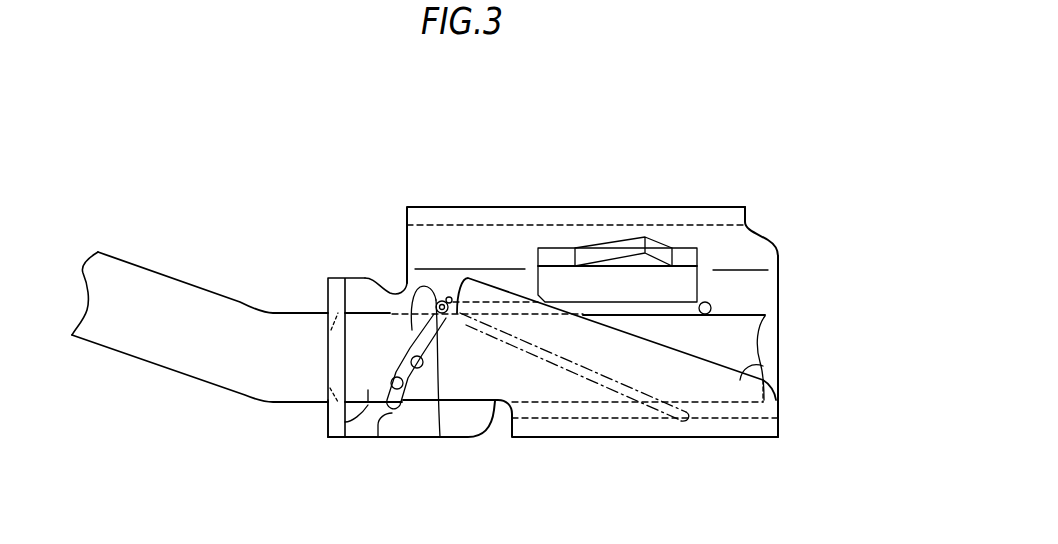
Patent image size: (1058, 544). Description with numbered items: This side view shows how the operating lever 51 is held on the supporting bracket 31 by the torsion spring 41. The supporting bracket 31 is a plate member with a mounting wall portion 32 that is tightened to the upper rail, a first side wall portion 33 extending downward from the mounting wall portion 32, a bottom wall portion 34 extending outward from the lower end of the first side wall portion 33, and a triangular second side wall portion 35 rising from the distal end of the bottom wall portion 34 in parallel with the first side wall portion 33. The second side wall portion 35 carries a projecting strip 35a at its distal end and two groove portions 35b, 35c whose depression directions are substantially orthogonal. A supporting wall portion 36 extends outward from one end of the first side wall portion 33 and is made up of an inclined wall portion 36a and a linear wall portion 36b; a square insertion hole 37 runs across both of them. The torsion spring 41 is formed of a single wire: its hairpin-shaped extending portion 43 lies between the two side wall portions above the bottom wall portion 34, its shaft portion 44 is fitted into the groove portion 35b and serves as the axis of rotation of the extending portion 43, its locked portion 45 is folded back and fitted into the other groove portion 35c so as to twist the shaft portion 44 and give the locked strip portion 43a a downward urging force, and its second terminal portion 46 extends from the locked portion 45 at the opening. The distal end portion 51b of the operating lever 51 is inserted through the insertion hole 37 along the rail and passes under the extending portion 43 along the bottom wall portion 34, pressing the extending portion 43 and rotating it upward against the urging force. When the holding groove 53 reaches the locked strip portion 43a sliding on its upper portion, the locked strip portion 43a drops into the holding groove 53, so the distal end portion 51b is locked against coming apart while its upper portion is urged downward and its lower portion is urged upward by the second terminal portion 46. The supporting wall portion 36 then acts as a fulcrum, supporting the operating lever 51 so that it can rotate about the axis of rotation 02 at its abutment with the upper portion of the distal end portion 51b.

The axis of rotation 02 is at (327, 332).
The supporting bracket 31 is at (621, 213).
The mounting wall portion 32 is at (706, 207).
The first side wall portion 33 is at (780, 279).
The bottom wall portion 34 is at (640, 438).
The second side wall portion 35 is at (587, 358).
The projecting strip 35a is at (431, 292).
The groove portion 35b is at (450, 316).
The groove portion 35c is at (419, 410).
The supporting wall portion 36 is at (313, 333).
The inclined wall portion 36a is at (365, 278).
The linear wall portion 36b is at (328, 293).
The insertion hole 37 is at (327, 387).
The torsion spring 41 is at (544, 367).
The extending portion 43 is at (596, 302).
The locked strip portion 43a is at (711, 307).
The shaft portion 44 is at (444, 301).
The locked portion 45 is at (445, 437).
The second terminal portion 46 is at (378, 438).
The operating lever 51 is at (187, 367).
The distal end portion 51b is at (328, 420).
The holding groove 53 is at (762, 333).